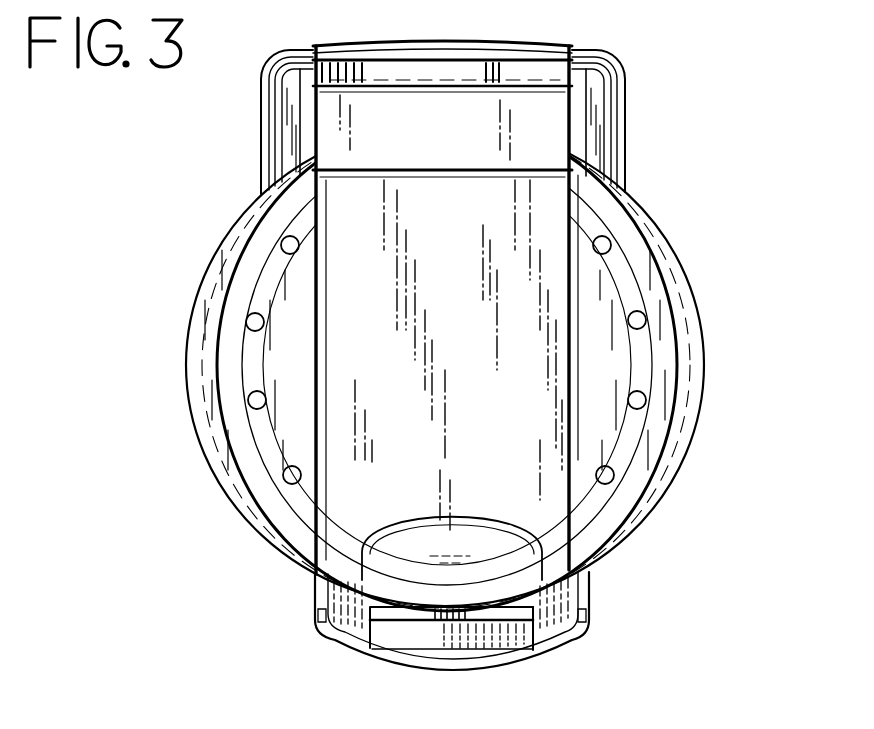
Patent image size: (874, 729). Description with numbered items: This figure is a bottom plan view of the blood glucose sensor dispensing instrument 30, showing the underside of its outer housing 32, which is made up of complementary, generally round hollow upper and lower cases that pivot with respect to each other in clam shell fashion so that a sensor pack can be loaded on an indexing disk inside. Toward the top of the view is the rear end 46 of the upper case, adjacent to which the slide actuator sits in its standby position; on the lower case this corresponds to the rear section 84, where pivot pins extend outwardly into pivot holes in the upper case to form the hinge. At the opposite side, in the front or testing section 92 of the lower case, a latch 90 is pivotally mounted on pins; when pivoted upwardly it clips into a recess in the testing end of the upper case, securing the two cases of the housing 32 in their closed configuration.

The sensor dispensing instrument 30 is at (762, 344).
The outer housing 32 is at (221, 493).
The rear end 46 is at (285, 53).
The rear section 84 is at (605, 53).
The latch 90 is at (507, 632).
The front or testing section 92 is at (586, 628).